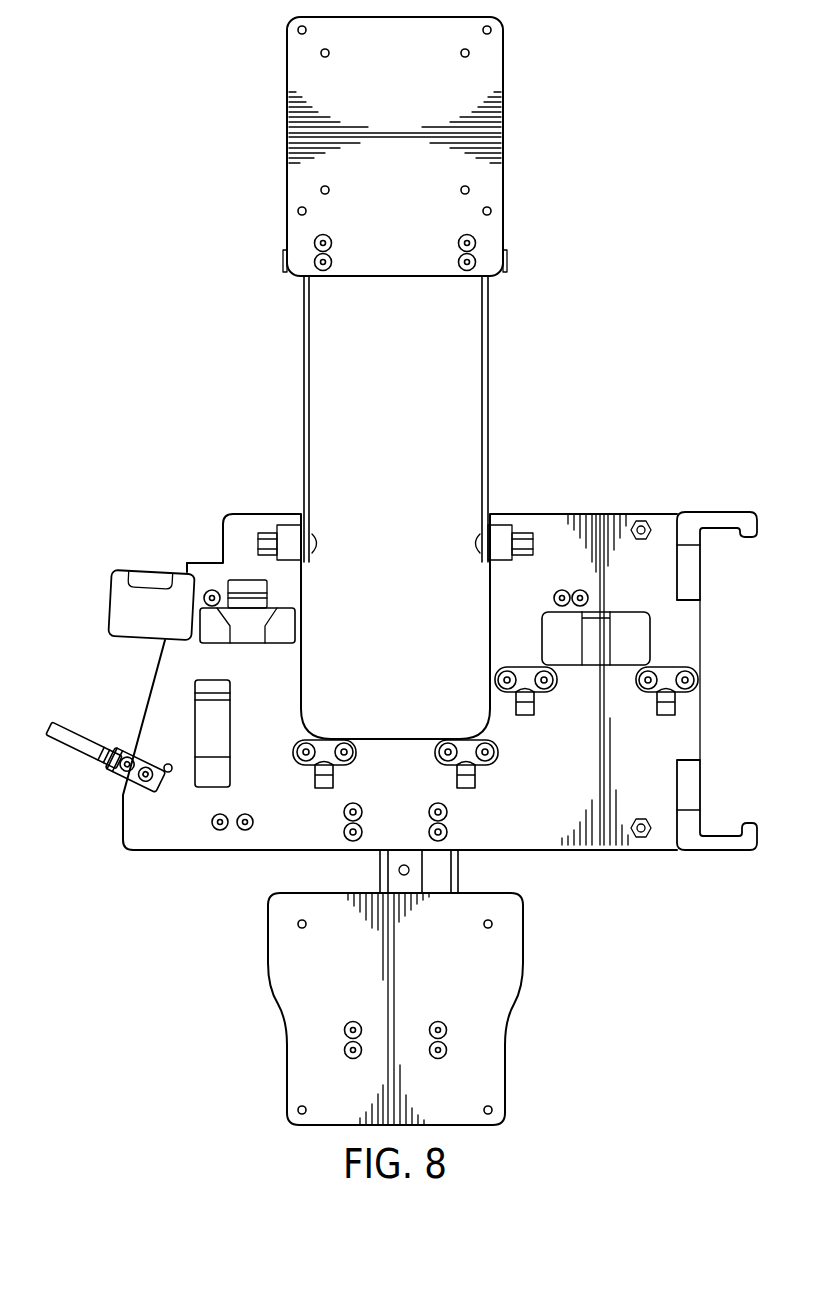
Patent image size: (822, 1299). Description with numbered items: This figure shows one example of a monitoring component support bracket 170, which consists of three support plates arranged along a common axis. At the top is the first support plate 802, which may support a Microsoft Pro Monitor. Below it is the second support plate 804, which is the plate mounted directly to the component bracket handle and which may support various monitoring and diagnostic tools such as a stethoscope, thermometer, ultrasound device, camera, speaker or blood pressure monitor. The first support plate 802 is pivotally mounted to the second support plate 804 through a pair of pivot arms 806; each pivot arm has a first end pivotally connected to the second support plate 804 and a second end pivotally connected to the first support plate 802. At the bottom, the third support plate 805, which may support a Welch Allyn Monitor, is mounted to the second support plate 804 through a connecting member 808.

The component support bracket 170 is at (634, 64).
The first support plate 802 is at (298, 70).
The second support plate 804 is at (185, 838).
The third support plate 805 is at (497, 1052).
The pivot arms 806 is at (303, 390).
The connecting member 808 is at (395, 858).